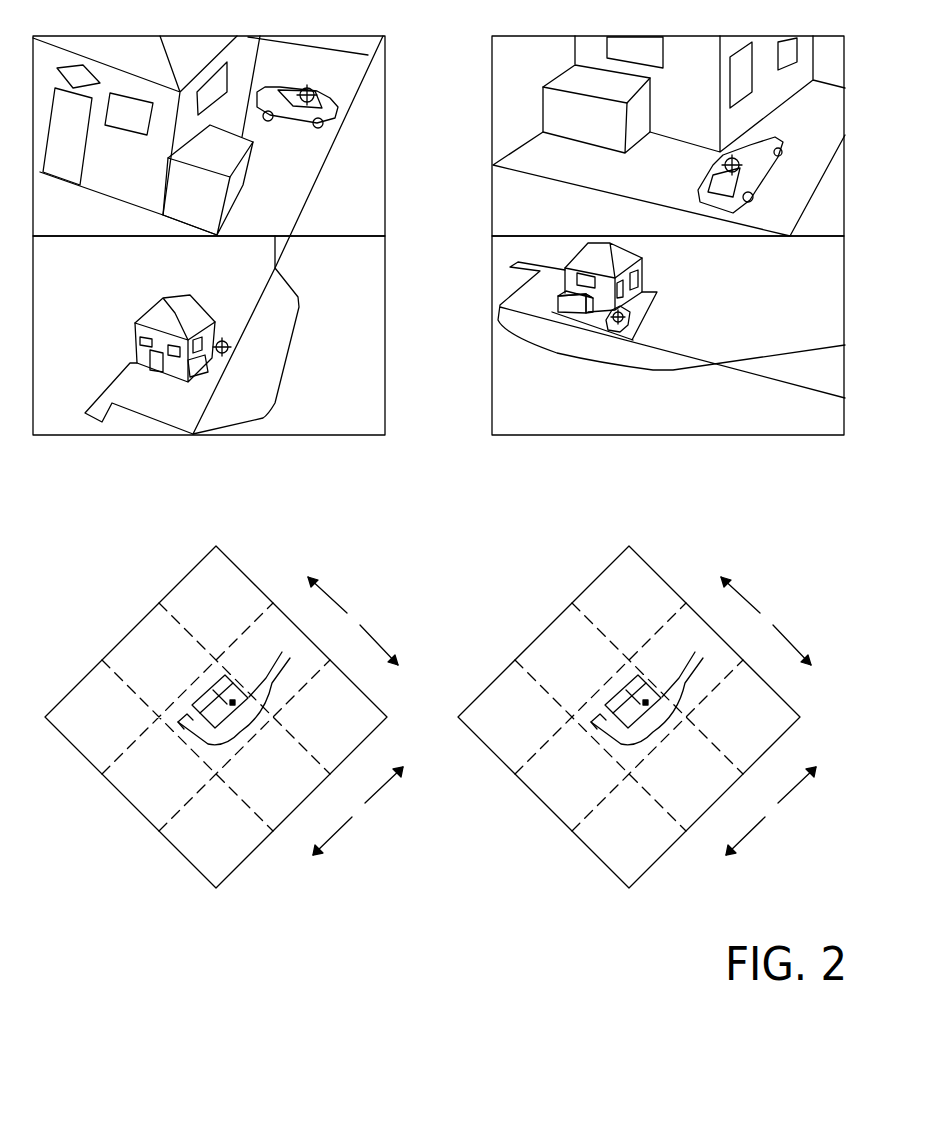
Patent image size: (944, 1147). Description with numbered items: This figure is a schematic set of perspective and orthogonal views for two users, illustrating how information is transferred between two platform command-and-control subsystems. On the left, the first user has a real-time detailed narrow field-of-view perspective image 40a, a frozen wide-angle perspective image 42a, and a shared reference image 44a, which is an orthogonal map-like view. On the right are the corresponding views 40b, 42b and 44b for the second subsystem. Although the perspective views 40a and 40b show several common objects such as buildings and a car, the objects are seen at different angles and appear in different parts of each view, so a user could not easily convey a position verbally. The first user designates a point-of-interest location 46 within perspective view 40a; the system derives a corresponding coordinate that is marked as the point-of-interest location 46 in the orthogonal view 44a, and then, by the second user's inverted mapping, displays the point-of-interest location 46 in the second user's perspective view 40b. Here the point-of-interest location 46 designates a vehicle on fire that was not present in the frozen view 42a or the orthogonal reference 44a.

The real-time detailed narrow FOV perspective image 40a is at (385, 181).
The frozen wide-angle perspective image 42a is at (387, 293).
The perspective view of second user 40b is at (492, 223).
The frozen wide-angle perspective image of second user 42b is at (492, 386).
The shared reference image 44a is at (389, 703).
The shared reference image of second user 44b is at (802, 703).
The point-of-interest location 46 is at (308, 91).